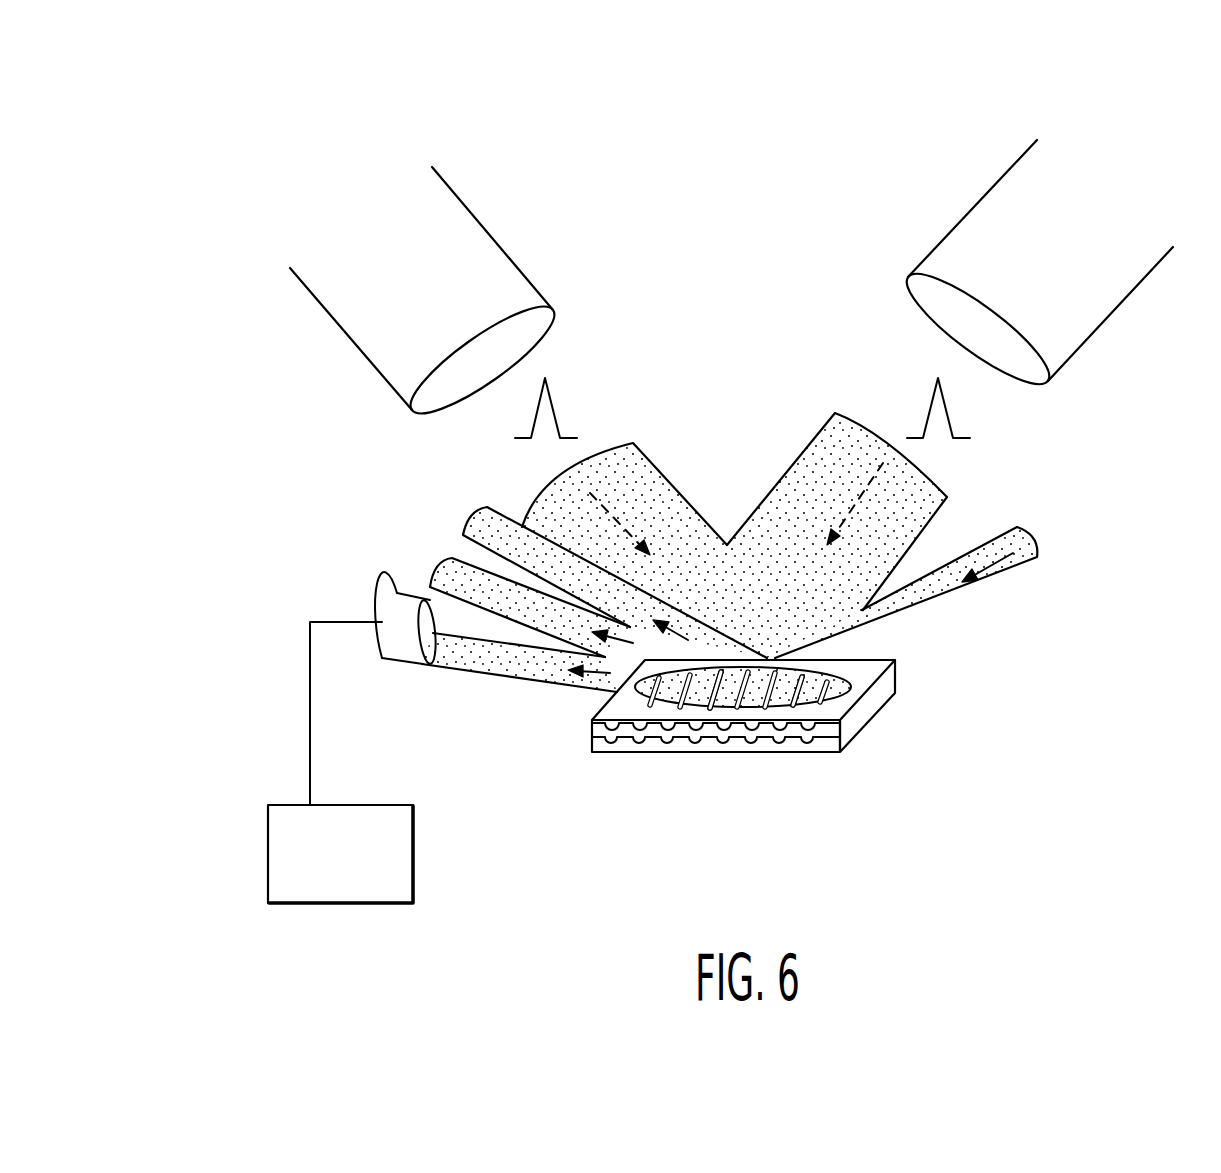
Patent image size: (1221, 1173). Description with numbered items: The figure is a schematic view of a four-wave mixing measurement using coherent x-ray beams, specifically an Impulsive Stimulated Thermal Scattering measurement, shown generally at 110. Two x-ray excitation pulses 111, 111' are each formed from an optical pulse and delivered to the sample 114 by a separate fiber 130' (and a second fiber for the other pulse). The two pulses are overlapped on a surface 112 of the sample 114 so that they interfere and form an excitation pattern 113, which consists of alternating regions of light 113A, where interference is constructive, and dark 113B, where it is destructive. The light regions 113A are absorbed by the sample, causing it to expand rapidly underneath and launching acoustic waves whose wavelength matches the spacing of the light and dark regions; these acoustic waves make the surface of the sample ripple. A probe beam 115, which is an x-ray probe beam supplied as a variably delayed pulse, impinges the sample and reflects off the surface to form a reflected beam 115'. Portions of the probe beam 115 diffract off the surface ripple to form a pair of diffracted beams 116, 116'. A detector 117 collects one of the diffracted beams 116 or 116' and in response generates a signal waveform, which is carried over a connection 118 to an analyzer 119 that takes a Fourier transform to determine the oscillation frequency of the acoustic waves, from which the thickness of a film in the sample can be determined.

The sensor arrangement 110 is at (1101, 655).
The x-ray excitation pulse 111 is at (734, 535).
The x-ray excitation pulse 111' is at (876, 511).
The surface 112 is at (897, 668).
The excitation pattern 113 is at (647, 703).
The light regions 113A is at (708, 712).
The dark regions 113B is at (802, 702).
The sample 114 is at (873, 710).
The probe beam 115 is at (911, 592).
The reflected beam 115' is at (494, 584).
The diffracted beam 116 is at (519, 692).
The diffracted beam 116' is at (606, 557).
The detector 117 is at (403, 667).
The signal line 118 is at (310, 716).
The evaluation unit 119 is at (415, 867).
The fiber 130' is at (418, 298).